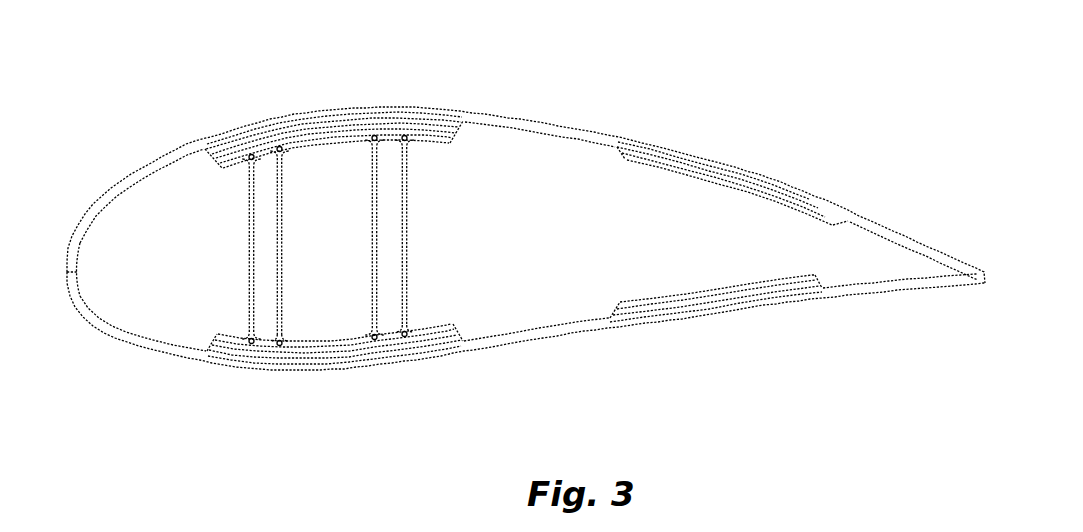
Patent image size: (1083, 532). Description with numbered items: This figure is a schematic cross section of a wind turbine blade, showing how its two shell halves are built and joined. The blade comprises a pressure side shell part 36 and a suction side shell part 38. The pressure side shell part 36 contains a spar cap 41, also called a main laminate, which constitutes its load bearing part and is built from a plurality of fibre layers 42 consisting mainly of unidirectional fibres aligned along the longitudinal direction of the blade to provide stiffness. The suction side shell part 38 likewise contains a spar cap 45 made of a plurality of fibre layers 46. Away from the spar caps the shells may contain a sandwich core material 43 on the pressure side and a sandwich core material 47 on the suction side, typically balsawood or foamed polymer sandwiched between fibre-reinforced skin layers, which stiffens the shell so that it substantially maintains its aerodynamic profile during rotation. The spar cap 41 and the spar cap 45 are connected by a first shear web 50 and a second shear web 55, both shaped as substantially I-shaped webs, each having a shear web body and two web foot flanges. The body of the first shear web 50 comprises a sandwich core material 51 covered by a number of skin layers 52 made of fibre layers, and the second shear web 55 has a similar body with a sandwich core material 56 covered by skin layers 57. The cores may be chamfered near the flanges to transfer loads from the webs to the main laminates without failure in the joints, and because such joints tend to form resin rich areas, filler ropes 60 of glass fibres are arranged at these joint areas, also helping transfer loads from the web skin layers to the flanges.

The pressure side shell part 36 is at (582, 342).
The suction side shell part 38 is at (565, 120).
The spar cap 41 is at (413, 358).
The fibre layers 42 is at (357, 363).
The sandwich core material 43 is at (727, 302).
The spar cap 45 is at (300, 108).
The fibre layers 46 is at (407, 128).
The sandwich core material 47 is at (723, 172).
The first shear web 50 is at (303, 246).
The sandwich core material 51 is at (285, 264).
The skin layers 52 is at (284, 191).
The second shear web 55 is at (436, 236).
The sandwich core material 56 is at (400, 260).
The skin layers 57 is at (412, 205).
The filler ropes 60 is at (372, 145).